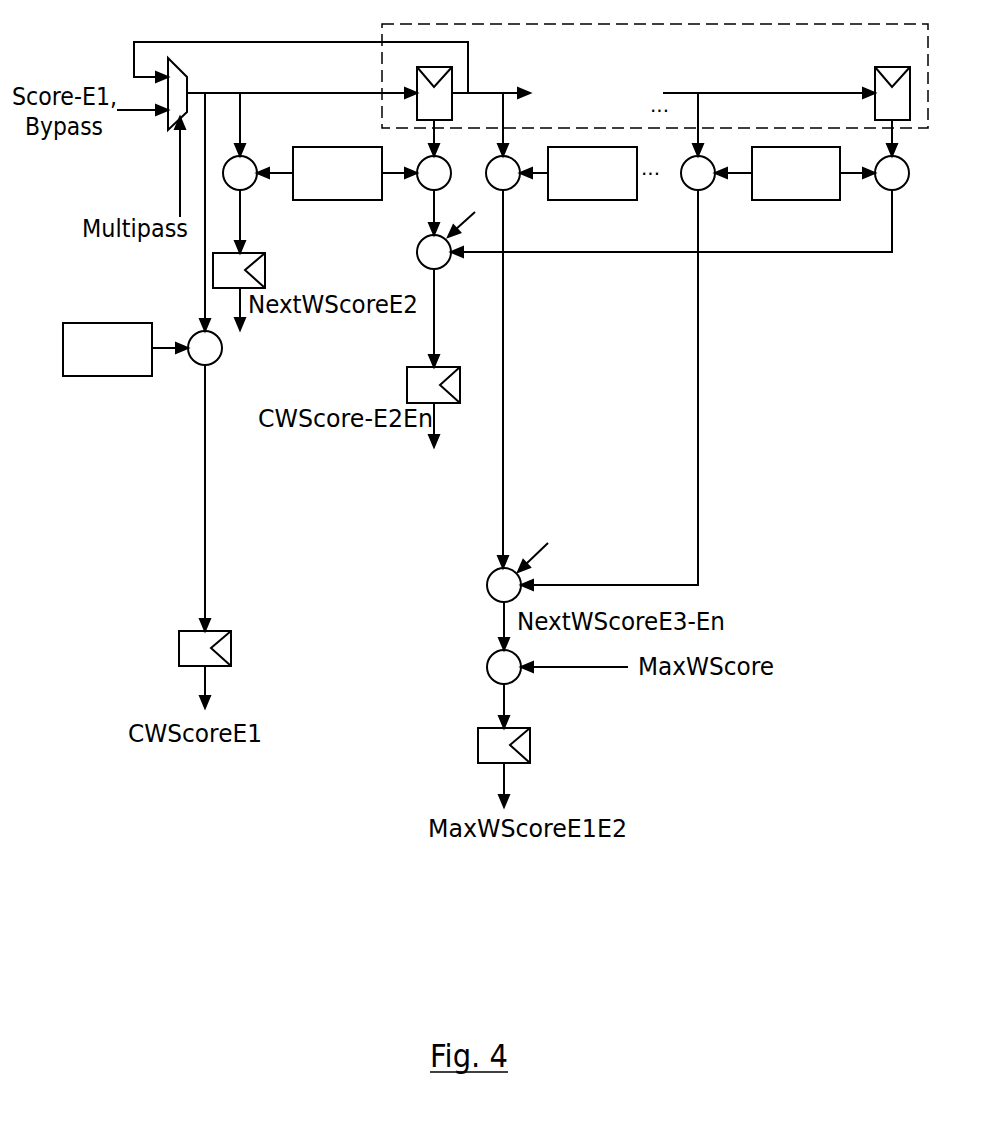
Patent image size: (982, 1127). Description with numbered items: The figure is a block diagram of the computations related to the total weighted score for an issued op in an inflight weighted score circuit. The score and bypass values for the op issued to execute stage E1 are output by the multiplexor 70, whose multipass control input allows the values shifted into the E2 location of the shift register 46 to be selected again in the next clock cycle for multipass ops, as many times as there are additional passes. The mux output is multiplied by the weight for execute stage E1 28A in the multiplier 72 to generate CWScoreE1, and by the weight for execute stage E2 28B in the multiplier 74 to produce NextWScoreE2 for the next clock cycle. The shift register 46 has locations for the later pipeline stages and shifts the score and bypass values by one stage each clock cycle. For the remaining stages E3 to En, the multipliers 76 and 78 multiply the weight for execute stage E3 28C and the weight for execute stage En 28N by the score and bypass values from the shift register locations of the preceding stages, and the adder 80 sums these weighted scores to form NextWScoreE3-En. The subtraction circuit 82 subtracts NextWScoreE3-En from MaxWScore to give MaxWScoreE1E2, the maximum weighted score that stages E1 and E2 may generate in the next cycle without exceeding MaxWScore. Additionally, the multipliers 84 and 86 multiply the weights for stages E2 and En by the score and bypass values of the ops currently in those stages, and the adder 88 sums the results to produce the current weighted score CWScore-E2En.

The shift register 46 is at (747, 59).
The multiplexor 70 is at (222, 90).
The multiplier 72 is at (258, 359).
The multiplier 74 is at (275, 153).
The multiplier 76 is at (533, 196).
The multiplier 78 is at (728, 196).
The adder 80 is at (467, 579).
The subtraction circuit 82 is at (467, 661).
The multiplier 84 is at (387, 210).
The multiplier 86 is at (883, 237).
The adder 88 is at (460, 285).
The weight for execute stage E1 28A is at (121, 377).
The weight for execute stage E2 28B is at (328, 195).
The weight for execute stage E3 28C is at (621, 191).
The weight for execute stage En 28N is at (823, 191).